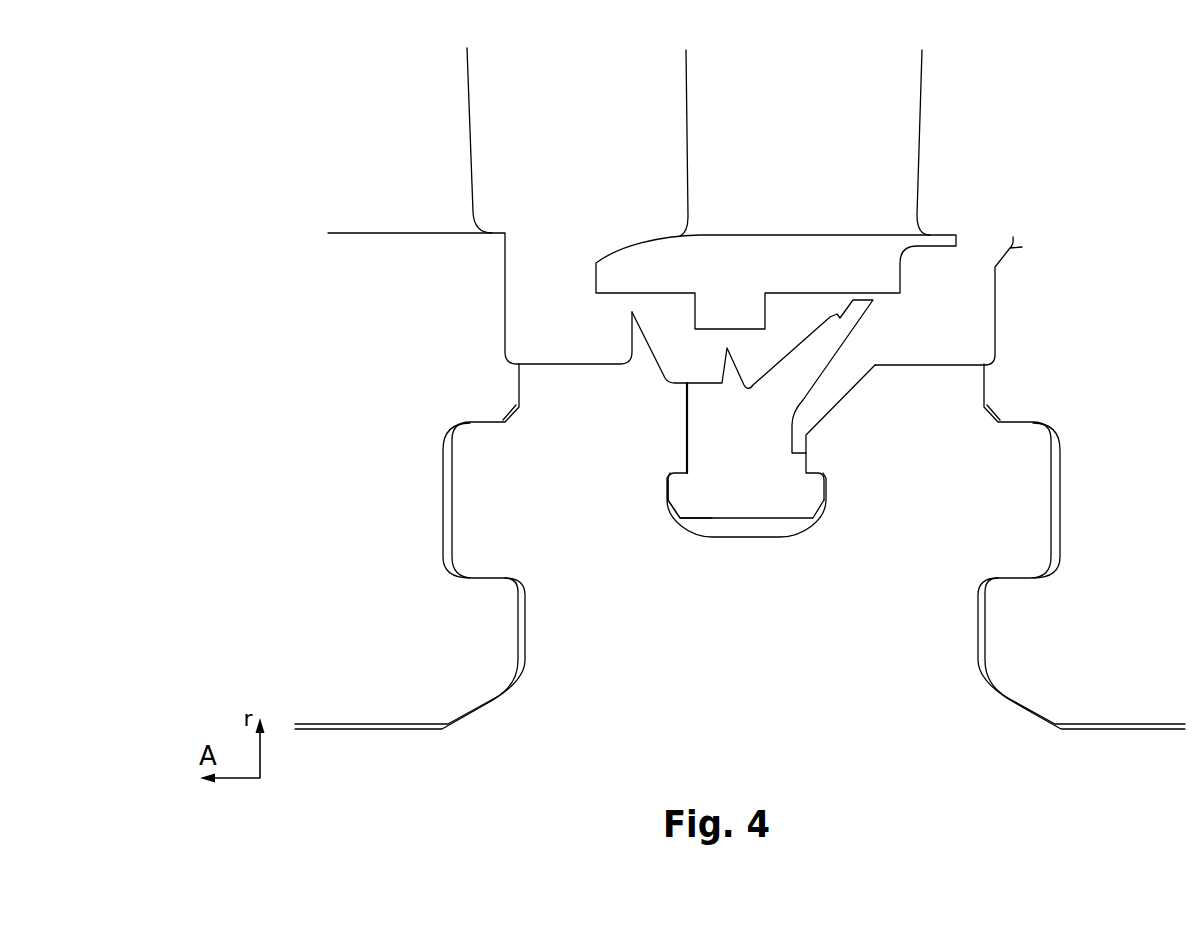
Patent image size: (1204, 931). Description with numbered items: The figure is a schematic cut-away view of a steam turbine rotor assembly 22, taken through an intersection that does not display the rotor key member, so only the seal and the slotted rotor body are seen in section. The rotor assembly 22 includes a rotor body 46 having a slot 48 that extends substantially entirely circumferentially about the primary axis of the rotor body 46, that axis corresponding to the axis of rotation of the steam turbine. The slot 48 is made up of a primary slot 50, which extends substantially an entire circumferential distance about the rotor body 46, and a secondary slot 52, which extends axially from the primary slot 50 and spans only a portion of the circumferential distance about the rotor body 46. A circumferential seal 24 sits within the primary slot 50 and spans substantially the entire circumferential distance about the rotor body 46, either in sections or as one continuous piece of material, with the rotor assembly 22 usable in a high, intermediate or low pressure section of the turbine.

The rotor assembly 22 is at (325, 157).
The circumferential seal 24 is at (762, 445).
The rotor body 46 is at (591, 520).
The slot 48 is at (706, 606).
The primary slot 50 is at (787, 558).
The secondary slot 52 is at (678, 560).